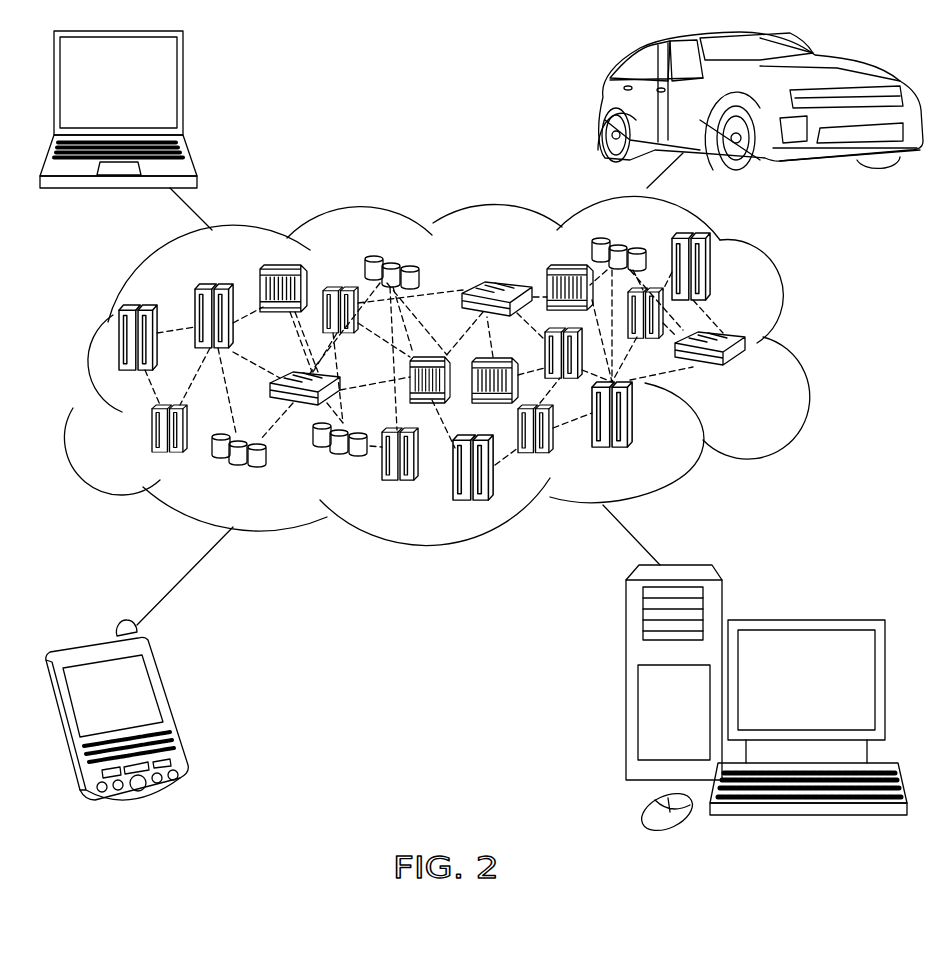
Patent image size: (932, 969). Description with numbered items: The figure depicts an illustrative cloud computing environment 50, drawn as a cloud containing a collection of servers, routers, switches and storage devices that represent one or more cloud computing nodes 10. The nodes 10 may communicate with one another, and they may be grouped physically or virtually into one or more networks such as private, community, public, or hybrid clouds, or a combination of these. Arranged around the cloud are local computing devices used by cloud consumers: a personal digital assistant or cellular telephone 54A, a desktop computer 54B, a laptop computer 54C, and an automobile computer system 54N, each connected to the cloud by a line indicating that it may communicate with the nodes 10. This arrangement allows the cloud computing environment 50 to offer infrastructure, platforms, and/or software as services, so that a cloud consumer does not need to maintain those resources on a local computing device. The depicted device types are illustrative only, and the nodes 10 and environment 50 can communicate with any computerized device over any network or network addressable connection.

The cloud computing nodes 10 is at (750, 377).
The cloud computing environment 50 is at (807, 347).
The personal digital assistant or cellular telephone 54A is at (173, 708).
The desktop computer 54B is at (805, 620).
The laptop computer 54C is at (183, 90).
The automobile computer system 54N is at (597, 105).